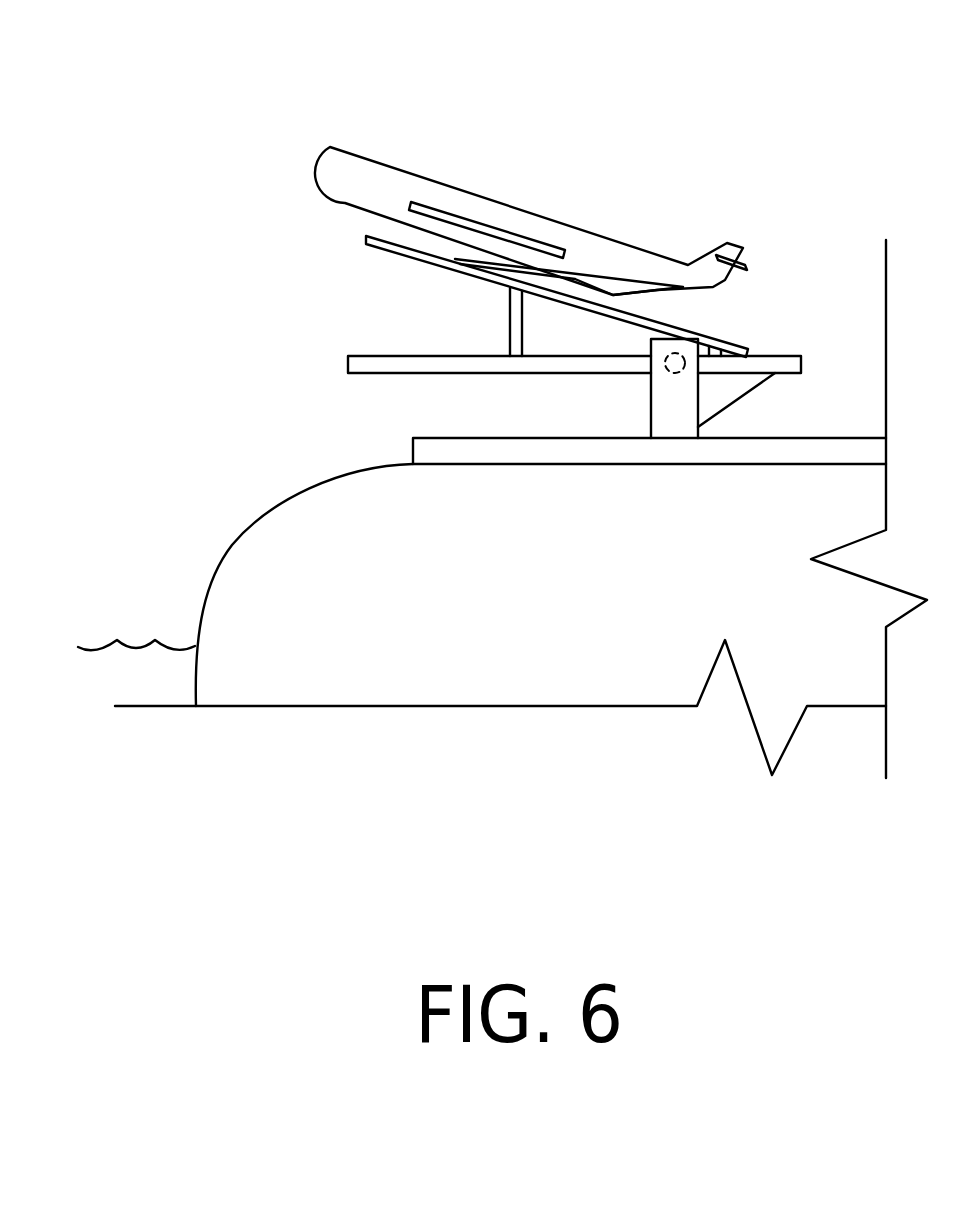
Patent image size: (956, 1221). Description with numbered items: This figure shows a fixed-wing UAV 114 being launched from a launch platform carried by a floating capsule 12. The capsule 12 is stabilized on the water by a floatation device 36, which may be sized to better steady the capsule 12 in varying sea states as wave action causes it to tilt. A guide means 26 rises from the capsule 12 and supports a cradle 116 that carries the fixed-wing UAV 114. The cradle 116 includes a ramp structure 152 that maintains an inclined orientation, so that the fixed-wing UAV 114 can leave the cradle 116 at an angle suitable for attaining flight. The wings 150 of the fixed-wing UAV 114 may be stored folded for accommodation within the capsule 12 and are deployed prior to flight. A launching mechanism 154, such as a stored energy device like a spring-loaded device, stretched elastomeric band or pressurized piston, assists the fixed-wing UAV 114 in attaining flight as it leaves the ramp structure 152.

The capsule 12 is at (410, 448).
The guide means 26 is at (650, 393).
The floatation device 36 is at (218, 568).
The fixed-wing UAV 114 is at (392, 165).
The cradle 116 is at (348, 365).
The wings 150 is at (478, 218).
The ramp structure 152 is at (418, 258).
The launching mechanism 154 is at (602, 279).